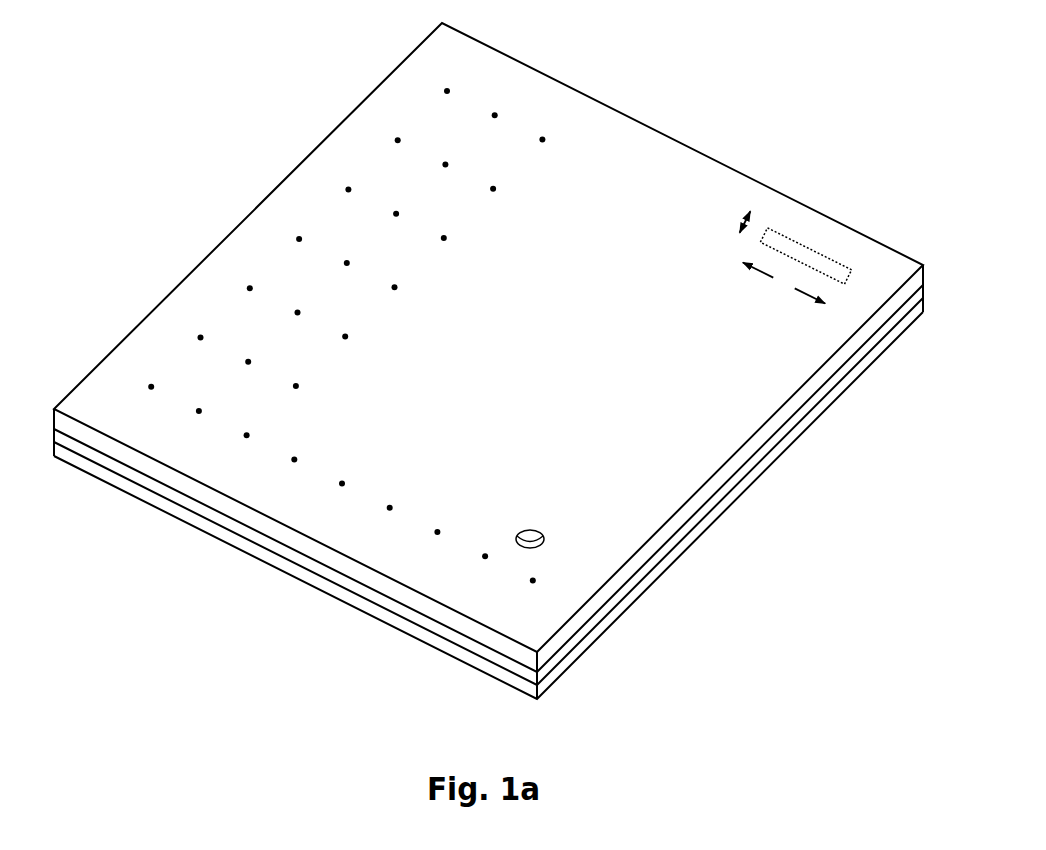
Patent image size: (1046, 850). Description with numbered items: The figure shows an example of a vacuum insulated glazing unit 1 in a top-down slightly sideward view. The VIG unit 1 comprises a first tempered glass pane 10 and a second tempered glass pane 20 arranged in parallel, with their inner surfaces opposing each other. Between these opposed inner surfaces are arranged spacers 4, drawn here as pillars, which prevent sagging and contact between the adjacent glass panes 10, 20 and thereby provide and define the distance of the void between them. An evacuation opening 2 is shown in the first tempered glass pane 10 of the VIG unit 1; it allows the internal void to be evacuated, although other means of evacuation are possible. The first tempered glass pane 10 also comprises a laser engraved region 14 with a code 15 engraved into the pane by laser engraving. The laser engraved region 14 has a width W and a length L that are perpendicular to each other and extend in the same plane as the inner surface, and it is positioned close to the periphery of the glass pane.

The vacuum insulated glazing unit 1 is at (491, 361).
The evacuation opening 2 is at (544, 533).
The spacers 4 is at (250, 287).
The first tempered glass pane 10 is at (848, 247).
The laser engraved region 14 is at (838, 301).
The code 15 is at (838, 276).
The second tempered glass pane 20 is at (735, 497).